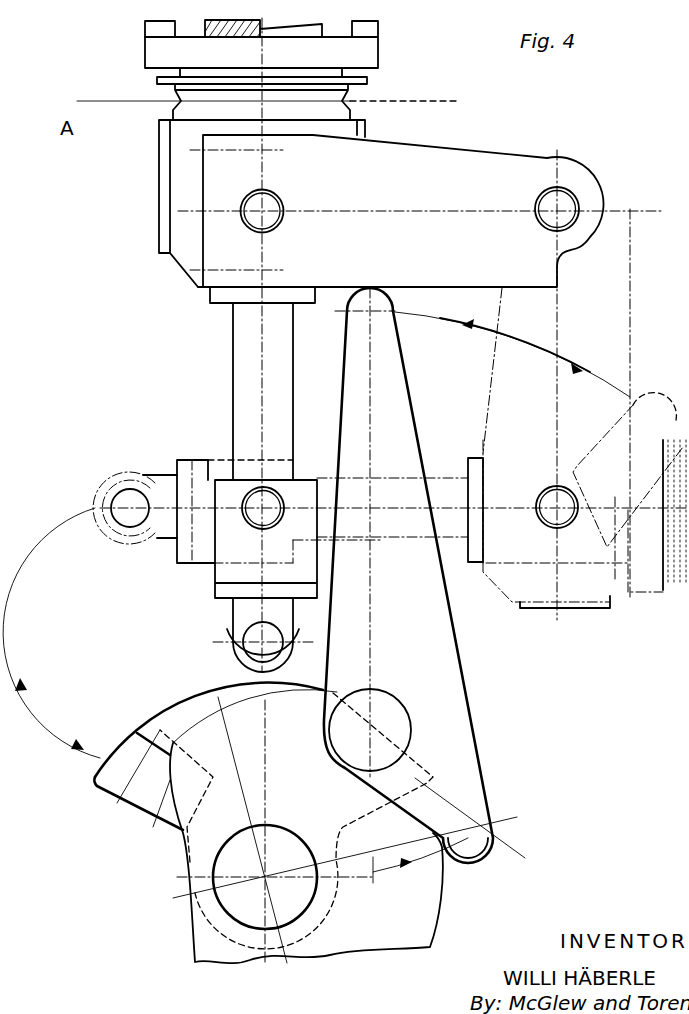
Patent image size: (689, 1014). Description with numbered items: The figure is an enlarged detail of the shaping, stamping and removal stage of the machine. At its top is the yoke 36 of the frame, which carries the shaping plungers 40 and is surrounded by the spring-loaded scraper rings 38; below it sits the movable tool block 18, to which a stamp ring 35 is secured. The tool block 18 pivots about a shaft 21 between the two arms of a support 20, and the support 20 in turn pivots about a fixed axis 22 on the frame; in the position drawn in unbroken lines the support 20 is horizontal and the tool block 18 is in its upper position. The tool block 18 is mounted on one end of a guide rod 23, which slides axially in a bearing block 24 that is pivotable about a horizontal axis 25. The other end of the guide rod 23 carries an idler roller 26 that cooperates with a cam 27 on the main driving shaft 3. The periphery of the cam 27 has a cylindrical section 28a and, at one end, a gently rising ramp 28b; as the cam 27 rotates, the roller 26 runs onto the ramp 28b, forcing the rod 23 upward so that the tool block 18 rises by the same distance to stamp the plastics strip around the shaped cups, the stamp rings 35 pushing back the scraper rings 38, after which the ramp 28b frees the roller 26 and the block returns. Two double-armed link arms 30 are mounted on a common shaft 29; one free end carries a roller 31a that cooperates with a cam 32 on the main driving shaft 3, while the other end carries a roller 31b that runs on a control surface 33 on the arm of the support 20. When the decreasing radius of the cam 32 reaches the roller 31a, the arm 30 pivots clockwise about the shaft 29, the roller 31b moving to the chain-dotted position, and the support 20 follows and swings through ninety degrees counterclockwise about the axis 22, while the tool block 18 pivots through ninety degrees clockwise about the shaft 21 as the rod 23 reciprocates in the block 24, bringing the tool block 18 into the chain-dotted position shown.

The main driving shaft 3 is at (232, 897).
The tool block 18 is at (175, 188).
The support 20 is at (458, 170).
The shaft 21 is at (272, 217).
The fixed axis 22 is at (560, 202).
The guide rod 23 is at (290, 362).
The bearing block 24 is at (208, 460).
The horizontal axis 25 is at (282, 488).
The idler roller 26 is at (118, 475).
The cam 27 is at (160, 712).
The cylindrical section 28a is at (193, 690).
The ramp 28b is at (100, 757).
The common shaft 29 is at (400, 720).
The double-armed link arm 30 is at (457, 688).
The roller 31a is at (495, 838).
The roller 31b is at (393, 303).
The cam 32 is at (422, 928).
The control surface 33 is at (460, 287).
The stamp ring 35 is at (175, 112).
The yoke 36 is at (145, 25).
The scraper ring 38 is at (365, 80).
The shaping plunger 40 is at (310, 27).